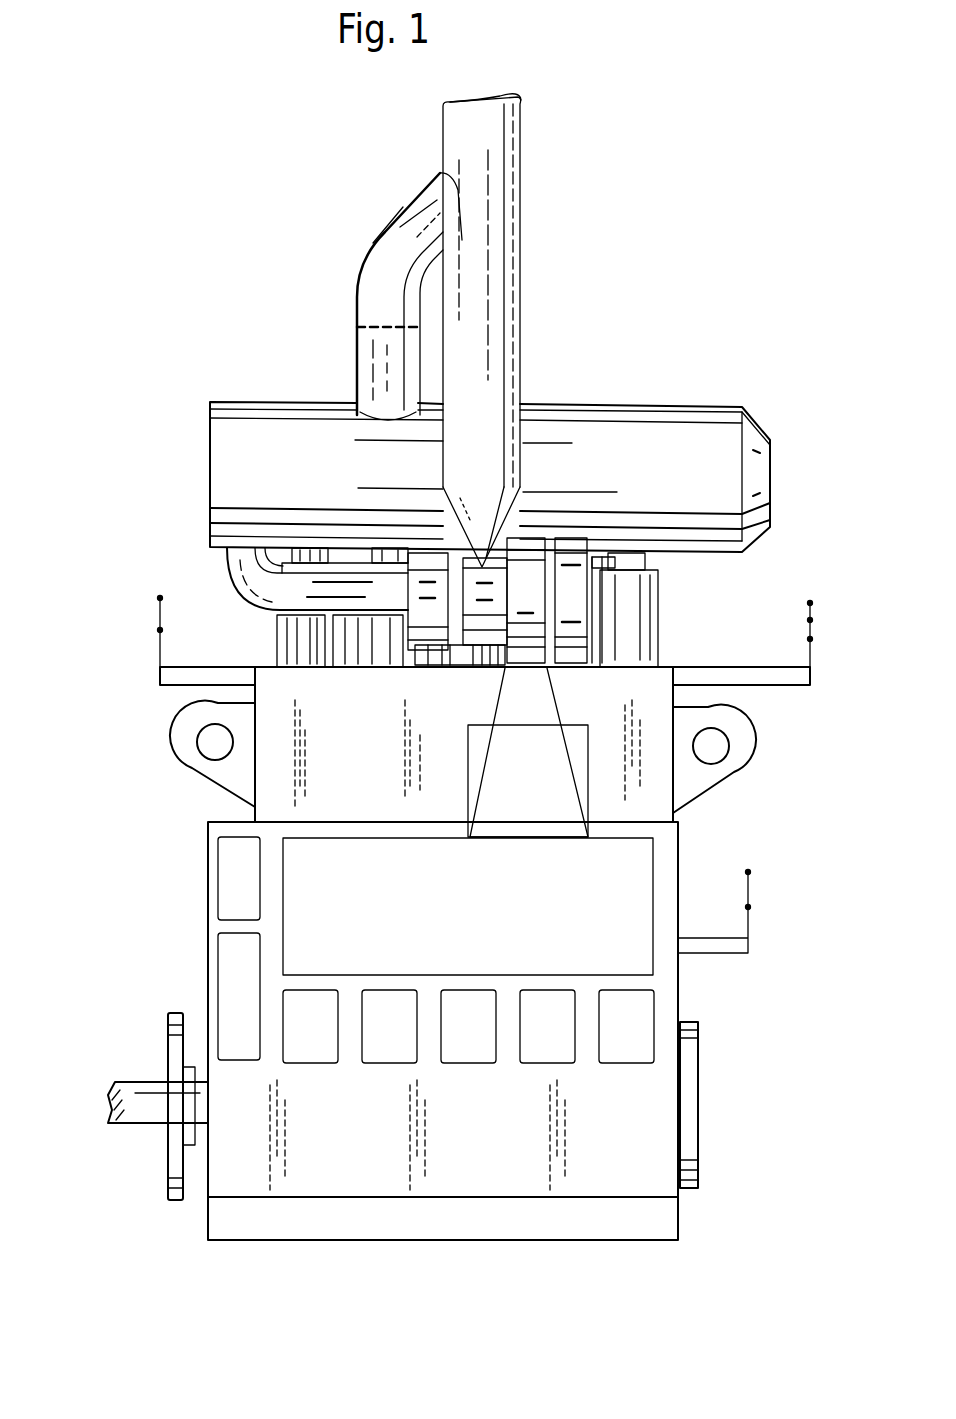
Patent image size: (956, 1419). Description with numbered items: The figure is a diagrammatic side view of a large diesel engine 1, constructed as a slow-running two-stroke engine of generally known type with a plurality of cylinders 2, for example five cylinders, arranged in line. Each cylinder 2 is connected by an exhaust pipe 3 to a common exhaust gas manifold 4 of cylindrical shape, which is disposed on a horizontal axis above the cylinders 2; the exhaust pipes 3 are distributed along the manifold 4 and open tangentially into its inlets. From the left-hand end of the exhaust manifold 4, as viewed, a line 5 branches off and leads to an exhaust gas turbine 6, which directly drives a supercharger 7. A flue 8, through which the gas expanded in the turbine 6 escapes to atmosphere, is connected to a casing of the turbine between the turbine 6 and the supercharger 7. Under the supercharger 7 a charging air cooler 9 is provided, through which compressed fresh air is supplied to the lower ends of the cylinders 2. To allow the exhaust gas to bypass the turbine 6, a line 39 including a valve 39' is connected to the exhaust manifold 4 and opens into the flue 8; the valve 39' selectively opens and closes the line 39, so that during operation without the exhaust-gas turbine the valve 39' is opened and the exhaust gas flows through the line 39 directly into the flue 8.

The diesel engine 1 is at (208, 890).
The cylinder 2 is at (375, 640).
The exhaust pipe 3 is at (645, 560).
The exhaust gas manifold 4 is at (665, 432).
The line 5 is at (228, 560).
The exhaust gas turbine 6 is at (407, 668).
The supercharger 7 is at (533, 580).
The flue 8 is at (510, 222).
The charging air cooler 9 is at (582, 800).
The line 39 is at (379, 296).
The valve 39' is at (365, 278).